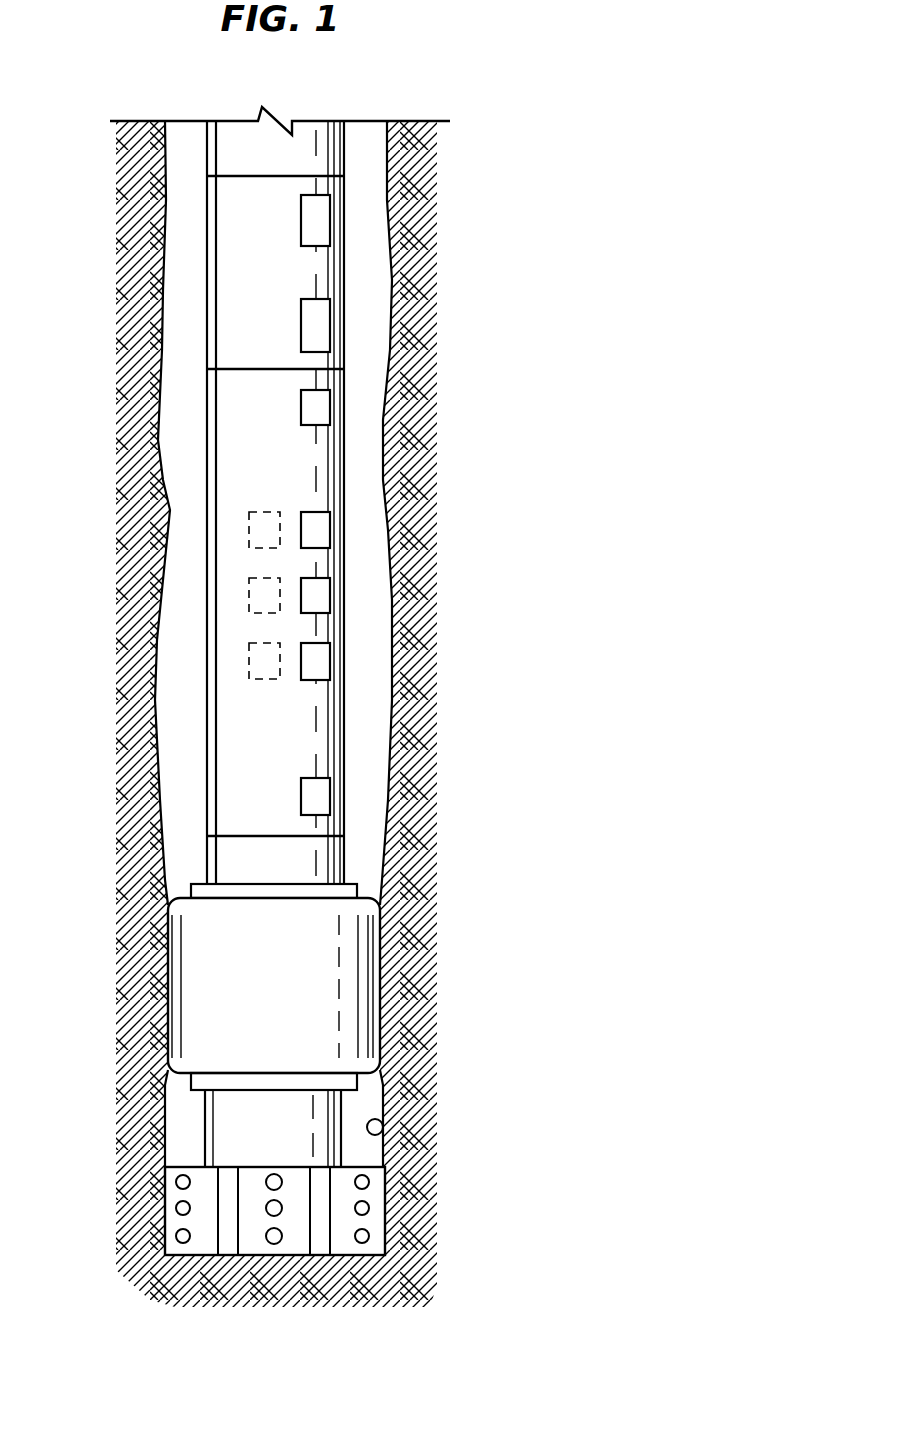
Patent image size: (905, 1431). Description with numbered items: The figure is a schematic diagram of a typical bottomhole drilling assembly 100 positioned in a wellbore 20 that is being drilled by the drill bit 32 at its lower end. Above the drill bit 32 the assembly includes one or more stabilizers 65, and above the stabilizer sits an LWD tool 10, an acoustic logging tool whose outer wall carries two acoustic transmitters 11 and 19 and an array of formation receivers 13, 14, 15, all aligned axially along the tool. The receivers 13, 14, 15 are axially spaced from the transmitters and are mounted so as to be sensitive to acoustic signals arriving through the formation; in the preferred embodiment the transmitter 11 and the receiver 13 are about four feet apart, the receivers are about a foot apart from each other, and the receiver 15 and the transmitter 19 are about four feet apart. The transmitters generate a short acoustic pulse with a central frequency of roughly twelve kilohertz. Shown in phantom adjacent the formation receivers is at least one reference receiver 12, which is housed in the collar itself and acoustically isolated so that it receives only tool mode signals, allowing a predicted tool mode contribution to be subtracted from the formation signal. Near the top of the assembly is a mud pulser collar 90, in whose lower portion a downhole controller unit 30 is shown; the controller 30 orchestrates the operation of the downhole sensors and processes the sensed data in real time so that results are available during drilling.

The bottomhole drilling assembly 100 is at (306, 688).
The LWD tool 10 is at (344, 736).
The mud pulser collar 90 is at (344, 252).
The downhole controller unit 30 is at (330, 325).
The acoustic transmitter 11 is at (330, 407).
The reference receiver 12 is at (249, 597).
The formation receiver 13 is at (330, 530).
The formation receiver 14 is at (330, 597).
The formation receiver 15 is at (330, 663).
The acoustic transmitter 19 is at (330, 795).
The stabilizer 65 is at (263, 997).
The wellbore 20 is at (383, 1119).
The drill bit 32 is at (385, 1215).